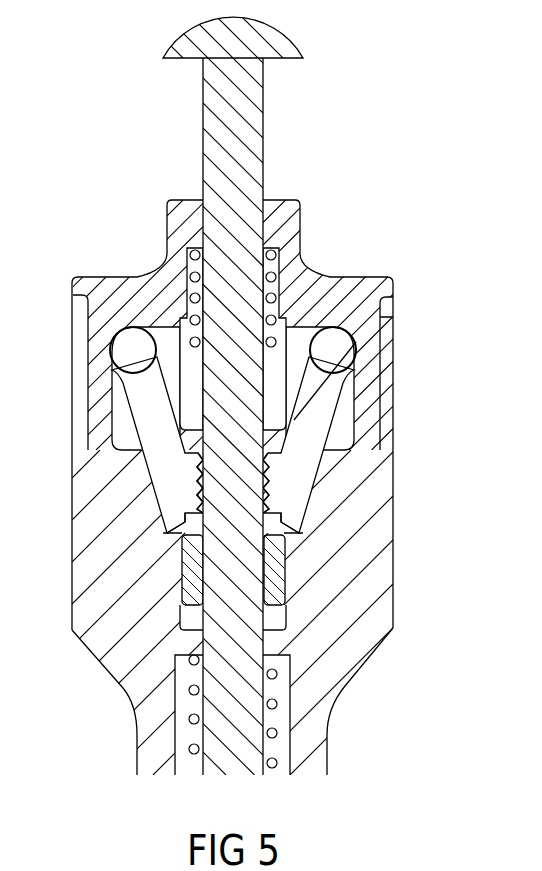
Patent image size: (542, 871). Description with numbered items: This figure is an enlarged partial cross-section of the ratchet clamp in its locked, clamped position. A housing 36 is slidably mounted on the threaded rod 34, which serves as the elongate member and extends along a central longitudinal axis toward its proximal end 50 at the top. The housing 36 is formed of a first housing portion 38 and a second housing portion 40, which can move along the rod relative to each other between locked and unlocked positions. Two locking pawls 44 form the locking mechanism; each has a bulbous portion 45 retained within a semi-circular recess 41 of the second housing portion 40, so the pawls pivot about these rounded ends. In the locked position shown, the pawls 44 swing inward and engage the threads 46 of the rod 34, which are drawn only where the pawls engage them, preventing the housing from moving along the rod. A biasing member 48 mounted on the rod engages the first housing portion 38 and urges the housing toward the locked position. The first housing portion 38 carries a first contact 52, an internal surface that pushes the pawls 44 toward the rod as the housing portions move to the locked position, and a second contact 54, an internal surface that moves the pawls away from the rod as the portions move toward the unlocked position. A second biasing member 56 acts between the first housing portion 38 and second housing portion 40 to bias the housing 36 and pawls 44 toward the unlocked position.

The threaded rod 34 is at (258, 130).
The housing 36 is at (397, 317).
The first housing portion 38 is at (372, 547).
The second housing portion 40 is at (105, 285).
The semi-circular recess 41 is at (172, 420).
The locking pawl 44 is at (235, 430).
The bulbous portion 45 is at (110, 372).
The threads 46 is at (202, 494).
The biasing member 48 is at (190, 722).
The proximal end 50 is at (268, 40).
The first contact 52 is at (195, 513).
The second contact 54 is at (185, 450).
The second biasing member 56 is at (282, 270).